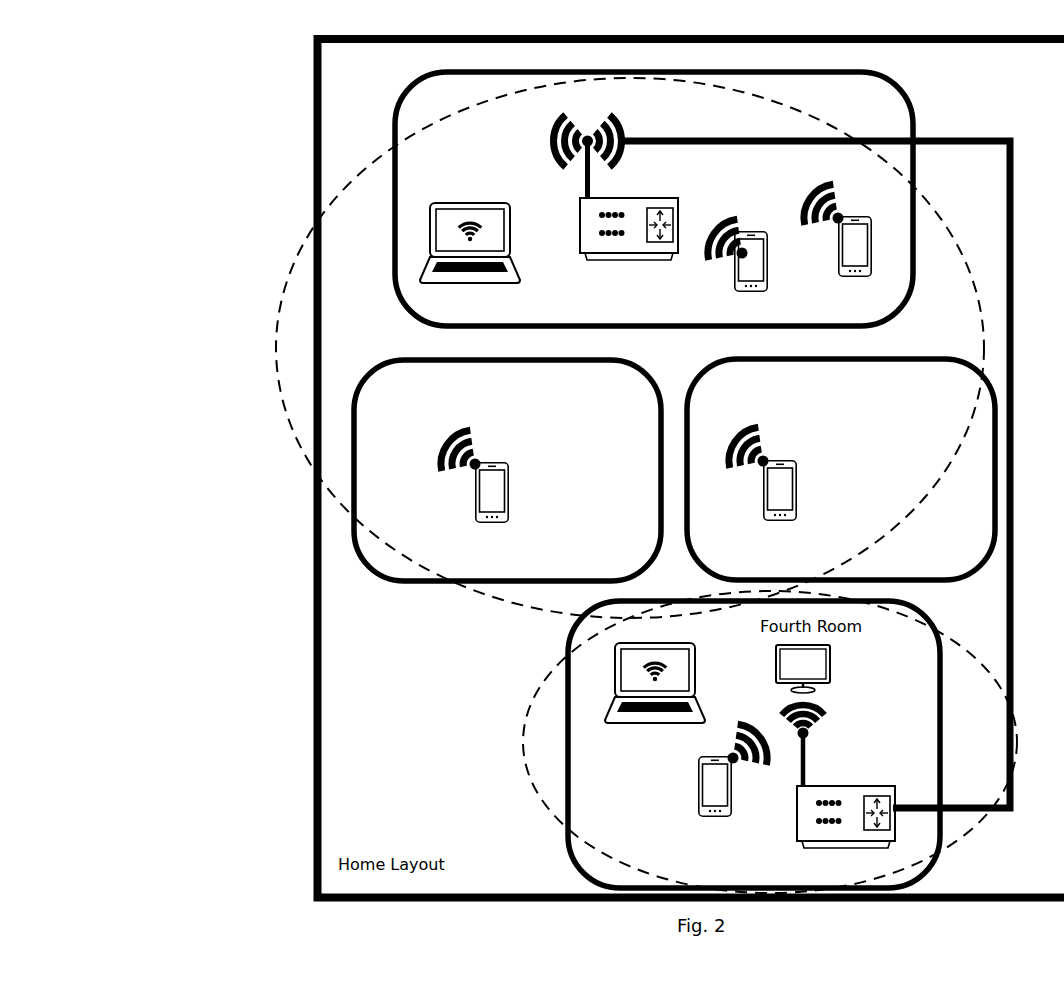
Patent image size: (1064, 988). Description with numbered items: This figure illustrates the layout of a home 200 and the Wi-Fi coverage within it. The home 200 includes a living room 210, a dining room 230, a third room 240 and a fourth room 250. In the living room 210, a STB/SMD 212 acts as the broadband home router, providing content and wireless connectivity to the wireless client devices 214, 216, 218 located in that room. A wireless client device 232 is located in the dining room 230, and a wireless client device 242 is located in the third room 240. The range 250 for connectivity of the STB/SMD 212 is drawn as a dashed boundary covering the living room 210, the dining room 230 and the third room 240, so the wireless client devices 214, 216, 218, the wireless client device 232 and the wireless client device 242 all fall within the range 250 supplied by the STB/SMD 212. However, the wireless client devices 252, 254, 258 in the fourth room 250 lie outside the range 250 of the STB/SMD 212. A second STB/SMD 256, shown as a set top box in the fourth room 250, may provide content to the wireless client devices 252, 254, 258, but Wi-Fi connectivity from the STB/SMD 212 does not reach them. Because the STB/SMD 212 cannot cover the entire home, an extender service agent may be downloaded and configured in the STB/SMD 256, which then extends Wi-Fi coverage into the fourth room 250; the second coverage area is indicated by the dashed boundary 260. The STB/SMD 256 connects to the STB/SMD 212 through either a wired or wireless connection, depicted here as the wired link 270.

The home 200 is at (189, 87).
The living room 210 is at (395, 108).
The STB/SMD 212 is at (628, 262).
The wireless client device 214 is at (466, 203).
The wireless client device 216 is at (765, 258).
The wireless client device 218 is at (872, 238).
The dining room 230 is at (418, 358).
The wireless client device 232 is at (510, 483).
The third room 240 is at (733, 357).
The wireless client device 242 is at (802, 492).
The range 250 is at (282, 303).
The wireless client device 252 is at (657, 723).
The wireless client device 254 is at (698, 792).
The STB/SMD 256 is at (843, 783).
The wireless client device 258 is at (832, 652).
The wireless coverage area of set top box 260 is at (523, 727).
The wired connection between router and set top box 270 is at (943, 148).